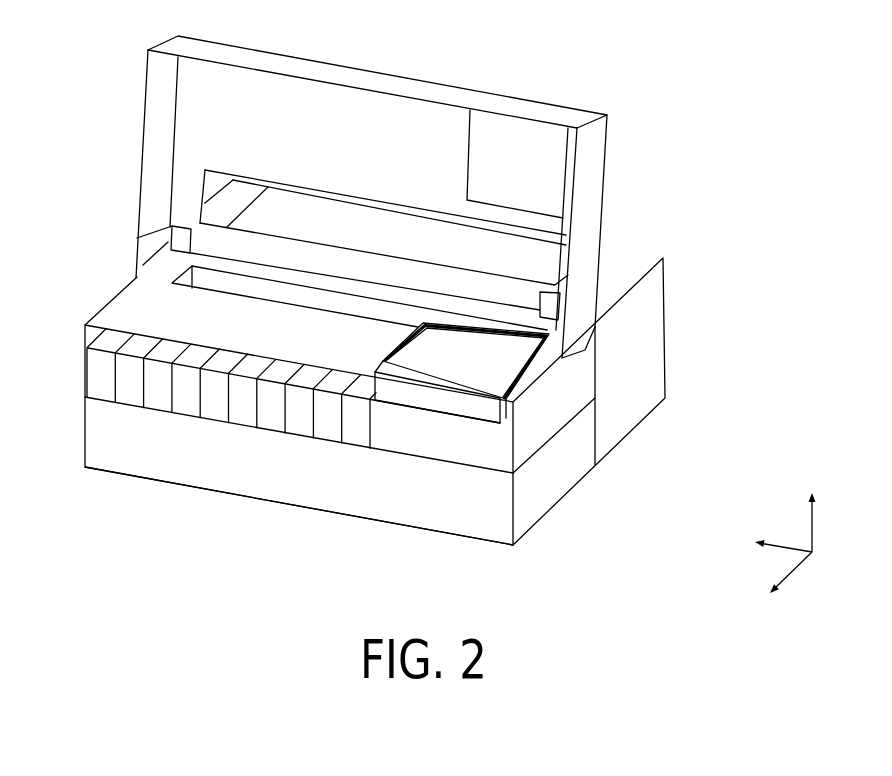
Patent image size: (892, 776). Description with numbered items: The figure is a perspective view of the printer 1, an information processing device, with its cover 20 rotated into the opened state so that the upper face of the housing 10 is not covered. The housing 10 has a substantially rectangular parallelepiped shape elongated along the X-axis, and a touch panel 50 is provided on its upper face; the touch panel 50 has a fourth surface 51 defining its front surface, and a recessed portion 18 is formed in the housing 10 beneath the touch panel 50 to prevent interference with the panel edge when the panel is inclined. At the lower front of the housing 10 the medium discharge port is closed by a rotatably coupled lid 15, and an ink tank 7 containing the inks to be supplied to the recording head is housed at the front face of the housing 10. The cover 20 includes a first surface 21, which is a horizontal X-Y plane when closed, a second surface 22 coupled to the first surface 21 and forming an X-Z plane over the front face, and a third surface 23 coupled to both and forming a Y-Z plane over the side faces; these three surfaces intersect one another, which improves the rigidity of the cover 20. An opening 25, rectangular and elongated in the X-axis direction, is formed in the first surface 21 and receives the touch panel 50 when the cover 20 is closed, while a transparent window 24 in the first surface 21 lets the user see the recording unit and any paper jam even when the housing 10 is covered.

The printer 1 is at (667, 71).
The ink tank 7 is at (213, 412).
The housing 10 is at (576, 507).
The lid 15 is at (336, 501).
The recessed portion 18 is at (408, 399).
The cover 20 is at (407, 70).
The first surface 21 is at (205, 122).
The second surface 22 is at (547, 122).
The third surface 23 is at (598, 170).
The window 24 is at (349, 214).
The opening 25 is at (478, 154).
The touch panel 50 is at (382, 348).
The fourth surface 51 is at (472, 352).